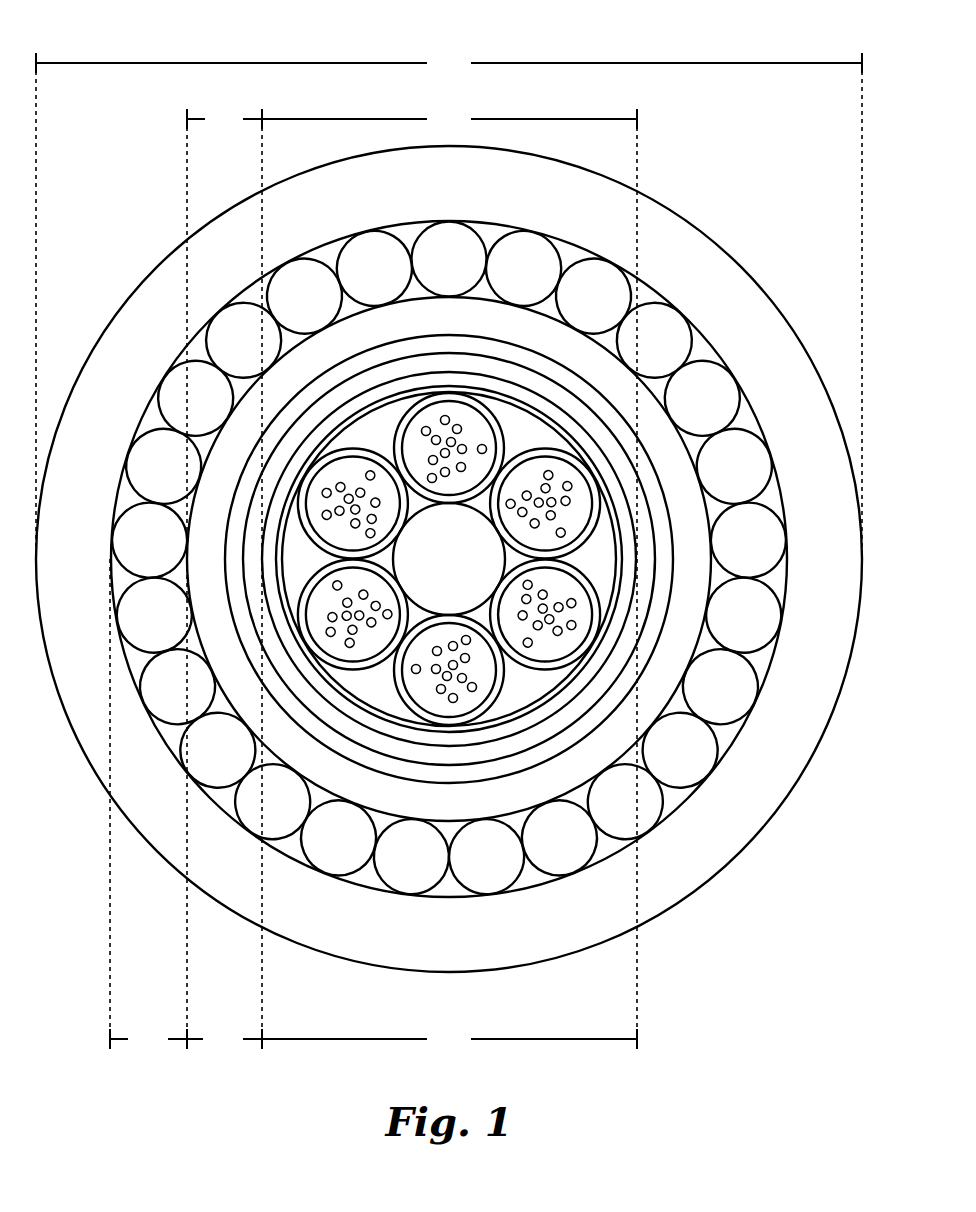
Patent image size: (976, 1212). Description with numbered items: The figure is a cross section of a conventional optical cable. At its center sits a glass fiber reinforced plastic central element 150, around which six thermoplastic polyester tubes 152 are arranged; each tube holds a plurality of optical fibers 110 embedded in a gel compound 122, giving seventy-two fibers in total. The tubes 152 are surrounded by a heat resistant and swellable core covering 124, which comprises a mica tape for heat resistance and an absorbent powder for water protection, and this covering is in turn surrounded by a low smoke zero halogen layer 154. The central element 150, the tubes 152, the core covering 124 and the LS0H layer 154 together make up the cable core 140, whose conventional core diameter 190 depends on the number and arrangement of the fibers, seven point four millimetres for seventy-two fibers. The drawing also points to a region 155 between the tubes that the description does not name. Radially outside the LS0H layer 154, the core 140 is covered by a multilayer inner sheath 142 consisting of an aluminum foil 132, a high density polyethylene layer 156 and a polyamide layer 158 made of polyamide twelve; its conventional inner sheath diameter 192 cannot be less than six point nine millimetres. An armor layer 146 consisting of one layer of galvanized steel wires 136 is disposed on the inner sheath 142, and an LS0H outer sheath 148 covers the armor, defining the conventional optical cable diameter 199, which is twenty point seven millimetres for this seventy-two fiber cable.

The optical fibers 110 is at (475, 423).
The gel compound 122 is at (432, 423).
The heat resistant and swellable core covering 124 is at (352, 419).
The aluminum foil 132 is at (254, 545).
The galvanized steel wires 136 is at (432, 270).
The cable core 140 is at (449, 1039).
The multilayer inner sheath 142 is at (224, 1039).
The armor layer 146 is at (148, 804).
The LS0H outer sheath 148 is at (431, 941).
The GFRP central element 150 is at (432, 570).
The thermoplastic polyester tubes 152 is at (483, 410).
The LS0H layer 154 is at (557, 410).
The filler material 155 is at (364, 693).
The high density polyethylene layer 156 is at (243, 617).
The polyamide layer 158 is at (205, 657).
The conventional core diameter 190 is at (449, 573).
The conventional inner sheath diameter 192 is at (224, 573).
The conventional optical cable diameter 199 is at (449, 305).